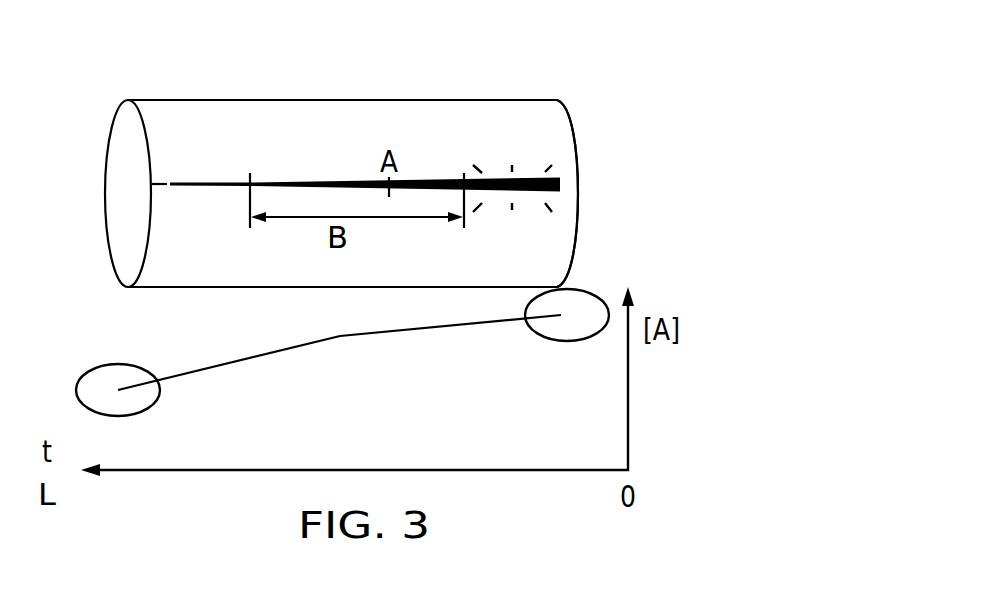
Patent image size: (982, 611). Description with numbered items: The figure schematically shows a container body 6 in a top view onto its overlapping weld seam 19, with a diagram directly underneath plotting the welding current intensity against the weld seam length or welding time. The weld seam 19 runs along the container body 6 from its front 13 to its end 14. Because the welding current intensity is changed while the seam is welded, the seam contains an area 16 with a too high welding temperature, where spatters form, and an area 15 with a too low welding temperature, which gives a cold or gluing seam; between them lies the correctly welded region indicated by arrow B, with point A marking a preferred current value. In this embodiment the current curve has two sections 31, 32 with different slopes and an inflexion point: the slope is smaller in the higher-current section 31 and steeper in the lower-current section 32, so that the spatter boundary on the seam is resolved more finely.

The container body 6 is at (246, 117).
The front of the body 13 is at (572, 129).
The end of the body 14 is at (127, 138).
The area with too low welding temperature 15 is at (195, 188).
The area with too high welding temperature 16 is at (524, 190).
The weld seam 19 is at (340, 181).
The section of the current intensity curve 31 is at (470, 324).
The section of the current intensity curve 32 is at (240, 360).